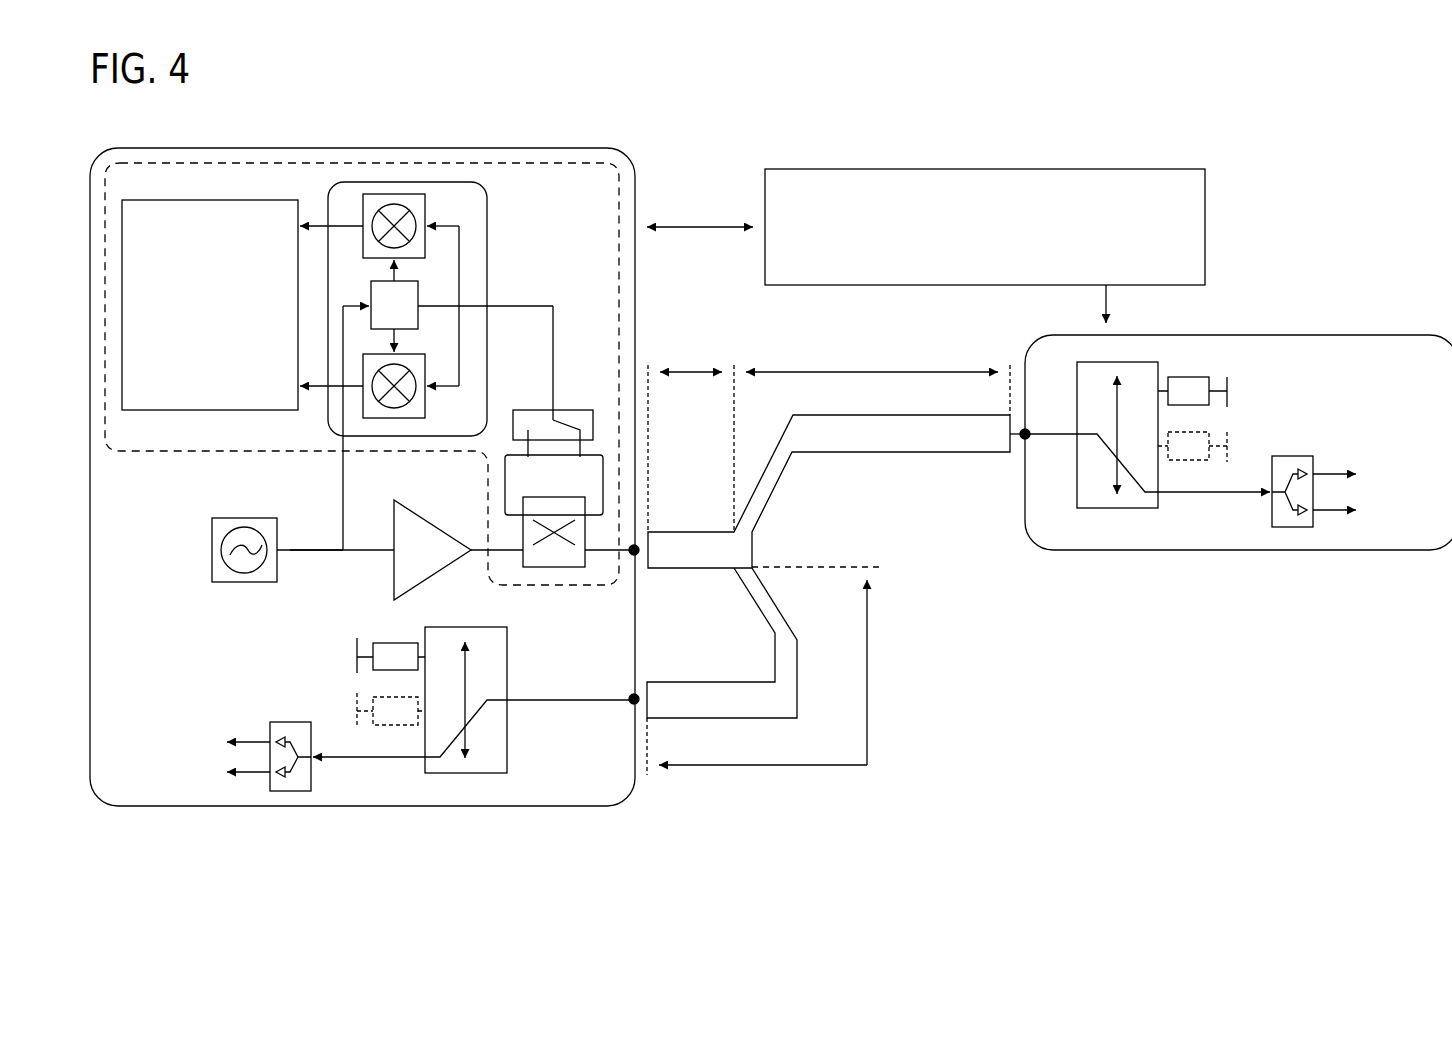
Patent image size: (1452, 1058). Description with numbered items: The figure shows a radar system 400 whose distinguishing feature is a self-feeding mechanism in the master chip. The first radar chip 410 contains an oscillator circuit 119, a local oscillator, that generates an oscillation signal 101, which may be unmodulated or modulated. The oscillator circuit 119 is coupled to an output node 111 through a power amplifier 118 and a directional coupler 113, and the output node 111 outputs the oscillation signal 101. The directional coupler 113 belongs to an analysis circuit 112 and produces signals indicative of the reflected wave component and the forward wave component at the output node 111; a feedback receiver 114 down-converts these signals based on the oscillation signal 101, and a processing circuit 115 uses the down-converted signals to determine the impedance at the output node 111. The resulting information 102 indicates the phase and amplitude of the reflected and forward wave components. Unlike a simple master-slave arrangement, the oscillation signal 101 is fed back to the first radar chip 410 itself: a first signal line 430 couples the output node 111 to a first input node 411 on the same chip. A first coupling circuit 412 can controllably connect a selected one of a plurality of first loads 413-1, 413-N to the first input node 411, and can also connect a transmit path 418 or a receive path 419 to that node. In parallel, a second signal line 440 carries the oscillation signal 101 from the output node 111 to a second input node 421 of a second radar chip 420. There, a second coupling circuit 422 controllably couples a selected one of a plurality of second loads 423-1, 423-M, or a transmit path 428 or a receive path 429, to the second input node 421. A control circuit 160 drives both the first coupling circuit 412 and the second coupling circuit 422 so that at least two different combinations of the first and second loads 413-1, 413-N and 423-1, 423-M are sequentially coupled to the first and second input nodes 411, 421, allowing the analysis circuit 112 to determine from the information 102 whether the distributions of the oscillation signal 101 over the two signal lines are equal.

The radar system 400 is at (1189, 762).
The first radar chip 410 is at (365, 148).
The second radar chip 420 is at (1325, 335).
The control circuit 160 is at (988, 169).
The analysis circuit 112 is at (163, 455).
The processing circuit 115 is at (228, 412).
The feedback receiver 114 is at (487, 206).
The information 102 is at (518, 307).
The directional coupler 113 is at (555, 568).
The power amplifier 118 is at (440, 526).
The oscillator circuit 119 is at (212, 548).
The oscillation signal 101 is at (305, 549).
The output node 111 is at (638, 556).
The first input node 411 is at (630, 696).
The first coupling circuit 412 is at (474, 774).
The first load 413-1 is at (388, 643).
The first load 413-N is at (396, 726).
The transmit path 418 is at (175, 740).
The receive path 419 is at (175, 772).
The second signal line 440 is at (888, 453).
The first signal line 430 is at (788, 618).
The second input node 421 is at (1030, 430).
The second coupling circuit 422 is at (1120, 509).
The second load 423-1 is at (1183, 377).
The second load 423-M is at (1185, 462).
The transmit path 428 is at (1382, 448).
The receive path 429 is at (1385, 532).